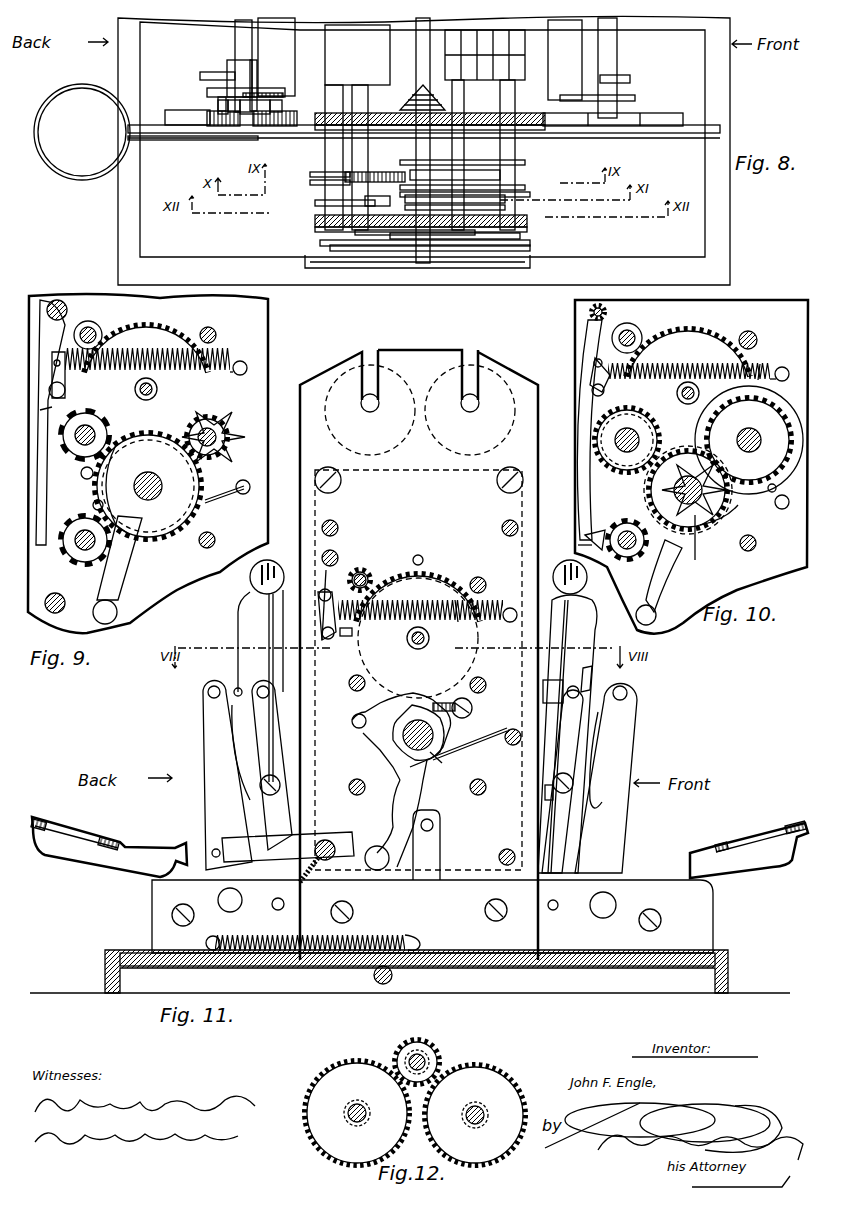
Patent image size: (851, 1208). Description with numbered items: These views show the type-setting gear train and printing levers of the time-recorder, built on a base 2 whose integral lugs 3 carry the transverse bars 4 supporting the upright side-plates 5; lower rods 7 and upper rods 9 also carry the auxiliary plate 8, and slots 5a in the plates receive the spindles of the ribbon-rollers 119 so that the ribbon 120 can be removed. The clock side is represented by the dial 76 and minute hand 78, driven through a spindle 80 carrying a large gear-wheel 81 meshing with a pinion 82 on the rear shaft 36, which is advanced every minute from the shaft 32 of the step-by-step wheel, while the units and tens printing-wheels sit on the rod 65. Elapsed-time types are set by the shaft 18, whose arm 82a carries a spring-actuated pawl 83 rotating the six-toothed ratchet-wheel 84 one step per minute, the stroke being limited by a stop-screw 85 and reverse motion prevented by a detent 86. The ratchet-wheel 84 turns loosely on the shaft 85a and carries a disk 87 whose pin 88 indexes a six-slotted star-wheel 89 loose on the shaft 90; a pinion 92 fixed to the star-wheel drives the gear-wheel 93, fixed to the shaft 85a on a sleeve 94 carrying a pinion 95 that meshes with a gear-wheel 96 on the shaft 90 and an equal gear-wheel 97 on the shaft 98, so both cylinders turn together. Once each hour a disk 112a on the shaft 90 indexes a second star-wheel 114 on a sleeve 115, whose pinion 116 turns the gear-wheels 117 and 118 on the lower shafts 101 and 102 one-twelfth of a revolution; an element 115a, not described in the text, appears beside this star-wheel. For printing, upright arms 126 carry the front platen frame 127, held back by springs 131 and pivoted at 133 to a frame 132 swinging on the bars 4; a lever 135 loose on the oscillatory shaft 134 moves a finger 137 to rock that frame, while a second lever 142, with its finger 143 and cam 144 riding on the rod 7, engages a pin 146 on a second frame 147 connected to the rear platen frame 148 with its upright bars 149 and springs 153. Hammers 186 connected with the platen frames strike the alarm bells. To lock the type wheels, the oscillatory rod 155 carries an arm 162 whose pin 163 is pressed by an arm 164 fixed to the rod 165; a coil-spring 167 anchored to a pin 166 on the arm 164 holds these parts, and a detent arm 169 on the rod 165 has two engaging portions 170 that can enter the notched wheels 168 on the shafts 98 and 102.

In FIG. 8, the base 2 is at (720, 258).
In FIG. 11, the base 2 is at (728, 966).
In FIG. 8, the lugs 3 is at (178, 110).
In FIG. 8, the bars 4 is at (143, 125).
In FIG. 11, the bars 4 is at (432, 916).
In FIG. 8, the side-plates 5 is at (525, 122).
In FIG. 9, the side-plates 5 is at (148, 463).
In FIG. 10, the side-plates 5 is at (691, 467).
In FIG. 11, the side-plates 5 is at (419, 655).
In FIG. 11, the slots 5a is at (380, 376).
In FIG. 8, the rods 7 is at (330, 93).
In FIG. 9, the rods 7 is at (52, 593).
In FIG. 11, the rods 7 is at (510, 849).
In FIG. 8, the auxiliary vertical plate 8 is at (527, 232).
In FIG. 11, the rods 9 is at (340, 526).
In FIG. 9, the shaft 18 is at (117, 610).
In FIG. 10, the shaft 18 is at (652, 620).
In FIG. 11, the shaft 18 is at (390, 860).
In FIG. 11, the shaft 32 is at (423, 558).
In FIG. 9, the rear shaft 36 is at (88, 326).
In FIG. 10, the rear shaft 36 is at (628, 330).
In FIG. 11, the rear shaft 36 is at (360, 572).
In FIG. 9, the rod 65 is at (216, 333).
In FIG. 10, the rod 65 is at (748, 332).
In FIG. 11, the rod 65 is at (486, 585).
In FIG. 8, the clock dial 76 is at (455, 262).
In FIG. 8, the minute hand 78 is at (372, 262).
In FIG. 9, the spindle 80 is at (135, 389).
In FIG. 10, the spindle 80 is at (680, 392).
In FIG. 11, the spindle 80 is at (416, 649).
In FIG. 9, the gear-wheel 81 is at (115, 345).
In FIG. 10, the gear-wheel 81 is at (658, 347).
In FIG. 11, the gear-wheel 81 is at (395, 600).
In FIG. 9, the pinion 82 is at (98, 330).
In FIG. 10, the pinion 82 is at (640, 335).
In FIG. 11, the pinion 82 is at (368, 578).
In FIG. 9, the arm 82a is at (128, 580).
In FIG. 10, the arm 82a is at (660, 598).
In FIG. 11, the arm 82a is at (402, 790).
In FIG. 11, the pawl 83 is at (368, 709).
In FIG. 11, the ratchet-wheel 84 is at (438, 727).
In FIG. 11, the stop-screw 85 is at (458, 699).
In FIG. 9, the shaft 85a is at (150, 476).
In FIG. 10, the shaft 85a is at (674, 492).
In FIG. 11, the shaft 85a is at (426, 756).
In FIG. 12, the shaft 85a is at (418, 1054).
In FIG. 9, the detent 86 is at (222, 499).
In FIG. 11, the detent 86 is at (490, 741).
In FIG. 8, the disk 87 is at (393, 155).
In FIG. 9, the disk 87 is at (130, 516).
In FIG. 9, the pin 88 is at (93, 504).
In FIG. 8, the star-wheel 89 is at (520, 160).
In FIG. 9, the star-wheel 89 is at (222, 418).
In FIG. 9, the shaft 90 is at (220, 437).
In FIG. 10, the shaft 90 is at (756, 448).
In FIG. 11, the shaft 90 is at (487, 686).
In FIG. 8, the pinion 92 is at (520, 165).
In FIG. 9, the pinion 92 is at (238, 486).
In FIG. 8, the gear-wheel 93 is at (382, 172).
In FIG. 9, the gear-wheel 93 is at (170, 530).
In FIG. 10, the gear-wheel 93 is at (712, 540).
In FIG. 8, the sleeve 94 is at (432, 175).
In FIG. 10, the pinion 95 is at (722, 512).
In FIG. 8, the gear-wheel 96 is at (527, 178).
In FIG. 10, the gear-wheel 96 is at (773, 415).
In FIG. 8, the gear-wheel 97 is at (320, 205).
In FIG. 10, the gear-wheel 97 is at (627, 442).
In FIG. 9, the shaft 98 is at (94, 428).
In FIG. 10, the shaft 98 is at (634, 438).
In FIG. 11, the shaft 98 is at (350, 682).
In FIG. 9, the shaft 101 is at (215, 538).
In FIG. 10, the shaft 101 is at (750, 551).
In FIG. 11, the shaft 101 is at (487, 788).
In FIG. 12, the shaft 101 is at (476, 1124).
In FIG. 9, the shaft 102 is at (86, 558).
In FIG. 10, the shaft 102 is at (632, 560).
In FIG. 11, the shaft 102 is at (356, 779).
In FIG. 12, the shaft 102 is at (356, 1122).
In FIG. 8, the disk 112a is at (522, 192).
In FIG. 10, the disk 112a is at (758, 497).
In FIG. 8, the star-wheel 114 is at (380, 218).
In FIG. 10, the star-wheel 114 is at (697, 562).
In FIG. 8, the sleeve 115 is at (430, 200).
In FIG. 10, the sleeve 115 is at (702, 488).
In FIG. 12, the sleeve 115 is at (440, 1060).
In FIG. 10, the pin 115a is at (773, 494).
In FIG. 8, the pinion 116 is at (400, 207).
In FIG. 12, the pinion 116 is at (400, 1055).
In FIG. 8, the gear-wheel 117 is at (532, 217).
In FIG. 12, the gear-wheel 117 is at (475, 1115).
In FIG. 8, the gear-wheel 118 is at (365, 200).
In FIG. 12, the gear-wheel 118 is at (357, 1113).
In FIG. 11, the ribbon-rollers 119 is at (370, 385).
In FIG. 11, the ribbon 120 is at (341, 474).
In FIG. 8, the upright arms 126 is at (577, 122).
In FIG. 11, the upright arms 126 is at (562, 776).
In FIG. 11, the platen frame 127 is at (574, 640).
In FIG. 11, the springs 131 is at (595, 681).
In FIG. 8, the frame 132 is at (622, 120).
In FIG. 11, the frame 132 is at (605, 930).
In FIG. 11, the pivot 133 is at (628, 693).
In FIG. 11, the oscillatory shaft 134 is at (487, 904).
In FIG. 11, the manually-operated lever 135 is at (678, 852).
In FIG. 11, the finger 137 is at (585, 850).
In FIG. 8, the second manually-operated lever 142 is at (190, 139).
In FIG. 11, the second manually-operated lever 142 is at (124, 862).
In FIG. 8, the finger 143 is at (250, 128).
In FIG. 11, the finger 143 is at (288, 847).
In FIG. 11, the cam 144 is at (320, 840).
In FIG. 8, the pin 146 is at (224, 130).
In FIG. 11, the pin 146 is at (212, 852).
In FIG. 8, the second frame 147 is at (235, 130).
In FIG. 11, the second frame 147 is at (217, 897).
In FIG. 8, the platen frame 148 is at (215, 95).
In FIG. 11, the platen frame 148 is at (265, 720).
In FIG. 8, the upright bars 149 is at (285, 125).
In FIG. 11, the upright bars 149 is at (270, 796).
In FIG. 8, the springs 153 is at (225, 72).
In FIG. 11, the springs 153 is at (268, 720).
In FIG. 9, the oscillatory rod 155 is at (65, 390).
In FIG. 10, the oscillatory rod 155 is at (592, 392).
In FIG. 11, the oscillatory rod 155 is at (326, 641).
In FIG. 9, the arm 162 is at (66, 372).
In FIG. 10, the arm 162 is at (594, 378).
In FIG. 11, the arm 162 is at (352, 634).
In FIG. 10, the pin 163 is at (594, 360).
In FIG. 11, the pin 163 is at (324, 615).
In FIG. 11, the arm 164 is at (320, 576).
In FIG. 9, the oscillatory rod 165 is at (52, 302).
In FIG. 10, the oscillatory rod 165 is at (590, 310).
In FIG. 11, the oscillatory rod 165 is at (340, 556).
In FIG. 11, the pin 166 is at (322, 600).
In FIG. 10, the coil-spring 167 is at (762, 368).
In FIG. 11, the coil-spring 167 is at (457, 622).
In FIG. 8, the notched wheels 168 is at (318, 185).
In FIG. 9, the notched wheels 168 is at (81, 474).
In FIG. 10, the notched wheels 168 is at (605, 540).
In FIG. 8, the detent arm 169 is at (315, 175).
In FIG. 9, the detent arm 169 is at (58, 408).
In FIG. 10, the detent arm 169 is at (590, 332).
In FIG. 9, the engaging portions 170 is at (53, 430).
In FIG. 10, the engaging portions 170 is at (585, 545).
In FIG. 11, the hammers 186 is at (262, 578).